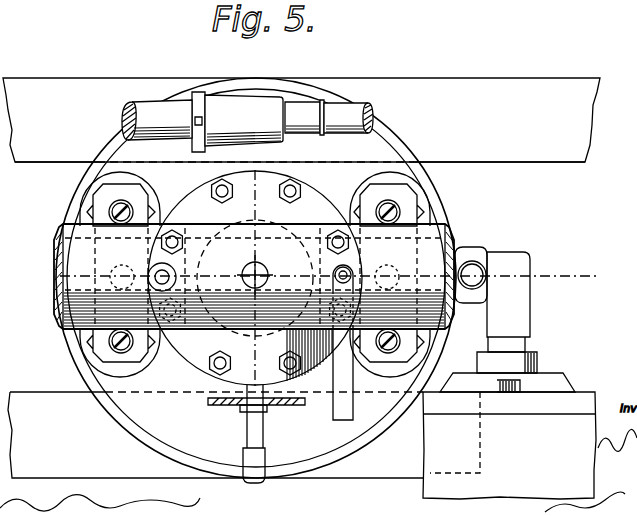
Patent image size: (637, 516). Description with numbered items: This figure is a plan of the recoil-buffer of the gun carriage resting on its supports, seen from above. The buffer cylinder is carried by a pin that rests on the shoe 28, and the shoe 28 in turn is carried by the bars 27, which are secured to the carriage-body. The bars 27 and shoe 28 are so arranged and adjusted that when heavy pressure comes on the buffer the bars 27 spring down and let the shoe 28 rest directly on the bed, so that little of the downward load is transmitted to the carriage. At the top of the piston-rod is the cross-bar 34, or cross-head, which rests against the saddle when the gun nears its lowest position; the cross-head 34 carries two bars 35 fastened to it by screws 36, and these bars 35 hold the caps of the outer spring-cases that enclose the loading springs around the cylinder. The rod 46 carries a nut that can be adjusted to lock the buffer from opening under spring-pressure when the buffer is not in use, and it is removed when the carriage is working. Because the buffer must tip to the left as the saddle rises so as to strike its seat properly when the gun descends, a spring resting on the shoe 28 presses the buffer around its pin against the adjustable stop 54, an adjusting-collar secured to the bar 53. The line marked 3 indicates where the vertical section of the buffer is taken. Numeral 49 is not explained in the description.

The section line 3 is at (92, 200).
The bars 27 is at (301, 278).
The shoe 28 is at (256, 278).
The cross-bar 34 is at (197, 249).
The bars 35 is at (420, 212).
The screws 36 is at (400, 206).
The rod 46 is at (509, 373).
The valve flange 49 is at (509, 404).
The bar 53 is at (247, 120).
The adjustable stop 54 is at (237, 122).